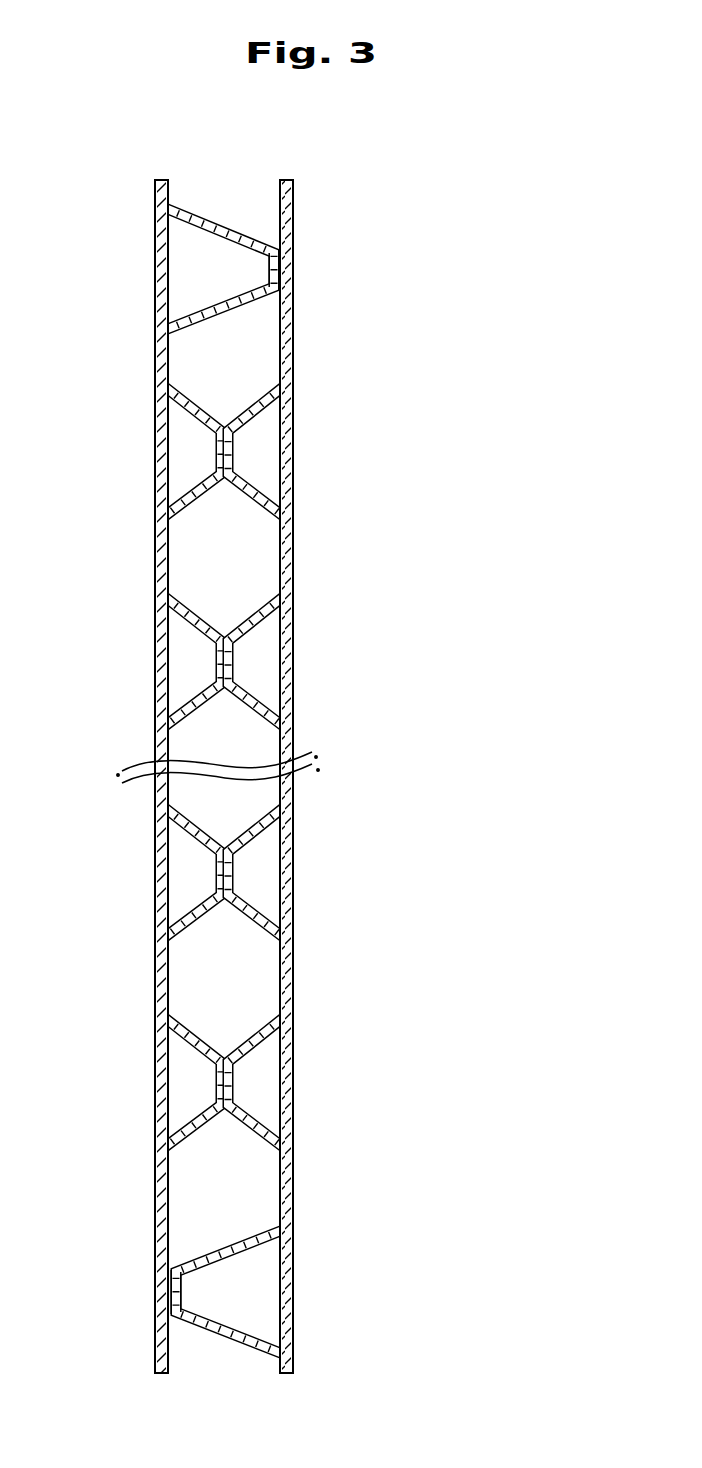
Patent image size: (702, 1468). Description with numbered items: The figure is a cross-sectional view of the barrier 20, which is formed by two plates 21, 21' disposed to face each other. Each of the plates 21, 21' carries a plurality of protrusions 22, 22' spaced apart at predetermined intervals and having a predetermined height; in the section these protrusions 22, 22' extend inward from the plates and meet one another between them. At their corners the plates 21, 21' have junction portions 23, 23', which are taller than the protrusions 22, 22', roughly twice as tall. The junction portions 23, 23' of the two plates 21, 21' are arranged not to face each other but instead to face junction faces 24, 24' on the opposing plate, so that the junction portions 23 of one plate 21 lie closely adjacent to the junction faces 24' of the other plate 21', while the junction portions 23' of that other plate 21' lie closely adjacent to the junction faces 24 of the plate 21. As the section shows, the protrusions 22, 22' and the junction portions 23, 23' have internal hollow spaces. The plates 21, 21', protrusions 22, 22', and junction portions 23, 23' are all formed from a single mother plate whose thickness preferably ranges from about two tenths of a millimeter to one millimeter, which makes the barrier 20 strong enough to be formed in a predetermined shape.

The barrier 20 is at (467, 221).
The plate 21 is at (131, 776).
The plate 21' is at (320, 776).
The protrusions 22 is at (158, 451).
The protrusions 22' is at (294, 451).
The junction portions 23 is at (266, 269).
The junction portions 23' is at (182, 1289).
The junction faces 24 is at (131, 1296).
The junction faces 24' is at (324, 273).